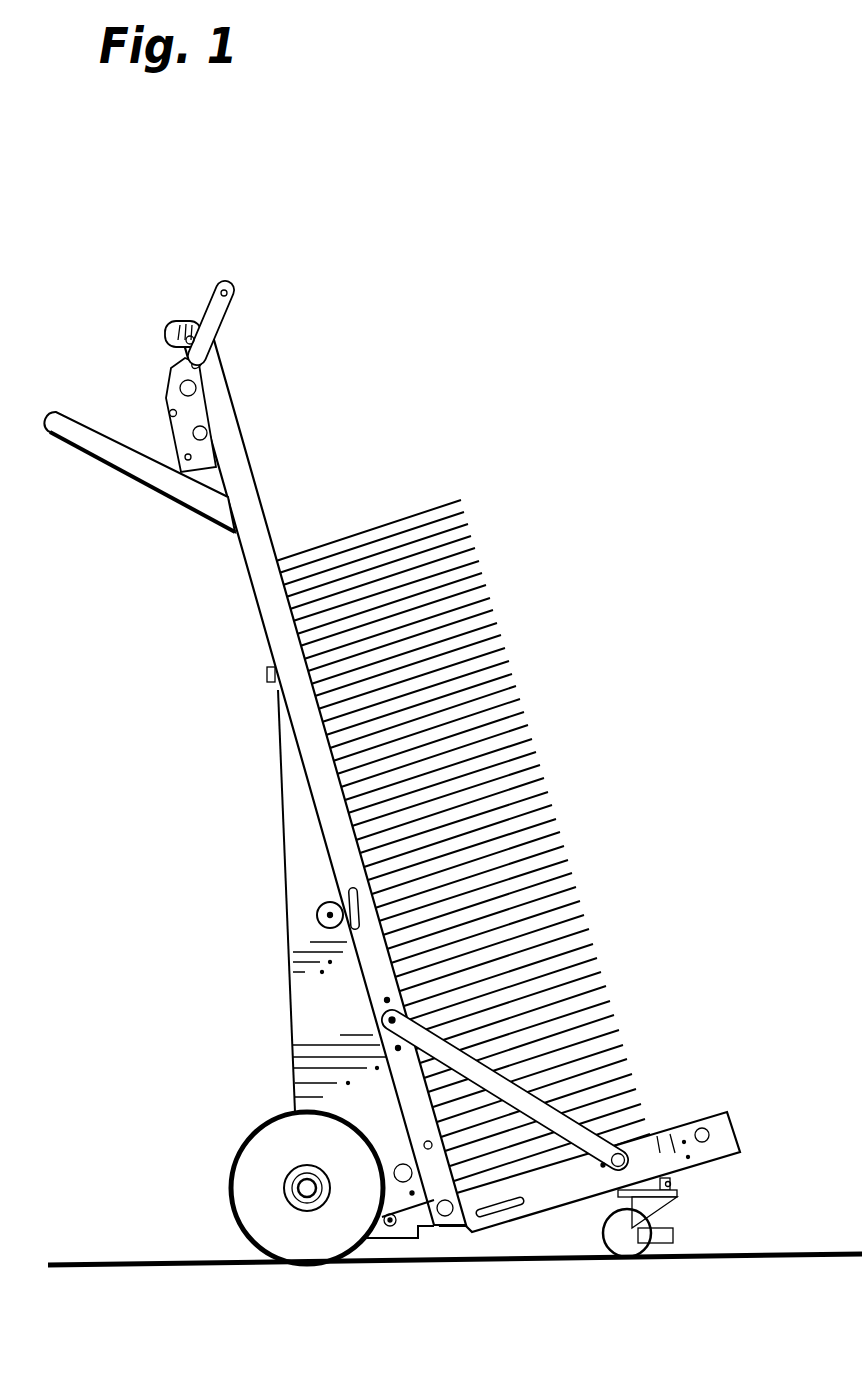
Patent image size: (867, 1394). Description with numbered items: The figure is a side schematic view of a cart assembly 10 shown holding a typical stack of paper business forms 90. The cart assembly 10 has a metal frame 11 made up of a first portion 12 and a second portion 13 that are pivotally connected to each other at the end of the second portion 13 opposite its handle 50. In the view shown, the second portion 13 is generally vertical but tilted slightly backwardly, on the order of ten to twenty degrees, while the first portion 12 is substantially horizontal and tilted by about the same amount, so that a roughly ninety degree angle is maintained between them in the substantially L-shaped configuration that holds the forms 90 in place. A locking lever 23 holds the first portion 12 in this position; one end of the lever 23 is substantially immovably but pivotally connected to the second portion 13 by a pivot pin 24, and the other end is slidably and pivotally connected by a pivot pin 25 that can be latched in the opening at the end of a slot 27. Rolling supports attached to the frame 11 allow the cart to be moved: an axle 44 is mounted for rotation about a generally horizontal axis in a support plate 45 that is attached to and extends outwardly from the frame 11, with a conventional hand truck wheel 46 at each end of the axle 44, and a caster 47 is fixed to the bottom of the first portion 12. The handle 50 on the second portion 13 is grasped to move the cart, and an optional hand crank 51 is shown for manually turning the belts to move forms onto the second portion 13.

The cart assembly 10 is at (439, 766).
The frame 11 is at (246, 1090).
The first portion 12 is at (704, 1147).
The second portion 13 is at (264, 603).
The locking lever 23 is at (544, 1118).
The pivot pin 24 is at (380, 1017).
The pivot pin 25 is at (627, 1145).
The slot 27 is at (520, 1200).
The axle 44 is at (300, 1199).
The support plate 45 is at (297, 861).
The wheel 46 is at (245, 1181).
The caster 47 is at (716, 1228).
The handle 50 is at (85, 449).
The hand crank 51 is at (206, 328).
The business forms 90 is at (602, 751).